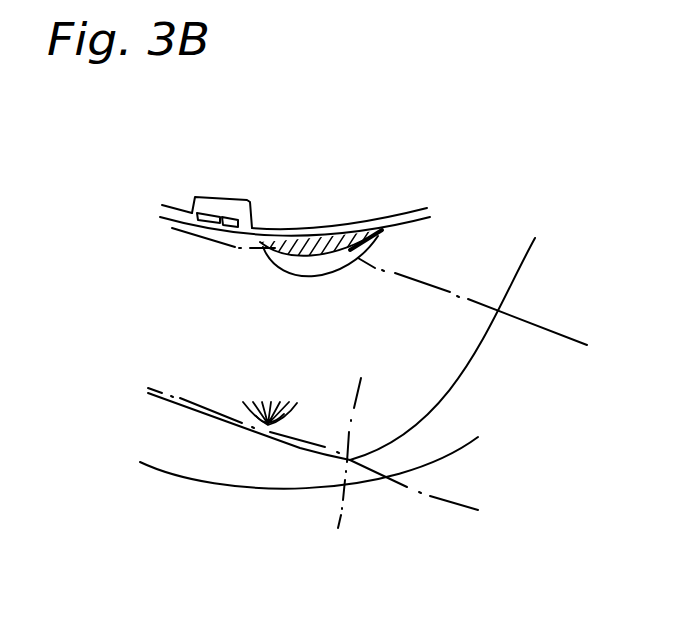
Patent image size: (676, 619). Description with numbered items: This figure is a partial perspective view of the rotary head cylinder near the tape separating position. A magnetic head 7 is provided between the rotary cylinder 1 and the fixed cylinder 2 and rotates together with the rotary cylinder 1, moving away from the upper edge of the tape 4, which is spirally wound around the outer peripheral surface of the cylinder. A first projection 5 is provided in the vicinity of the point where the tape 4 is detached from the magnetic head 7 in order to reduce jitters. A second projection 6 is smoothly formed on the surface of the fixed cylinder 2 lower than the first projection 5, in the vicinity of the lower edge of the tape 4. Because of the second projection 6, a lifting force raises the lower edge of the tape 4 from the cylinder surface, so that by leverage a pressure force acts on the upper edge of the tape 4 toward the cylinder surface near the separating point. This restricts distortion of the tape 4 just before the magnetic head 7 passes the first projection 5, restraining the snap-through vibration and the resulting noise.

The rotary cylinder 1 is at (298, 180).
The fixed cylinder 2 is at (171, 492).
The tape 4 is at (339, 476).
The first projection 5 is at (350, 238).
The second projection 6 is at (268, 427).
The magnetic head 7 is at (208, 213).